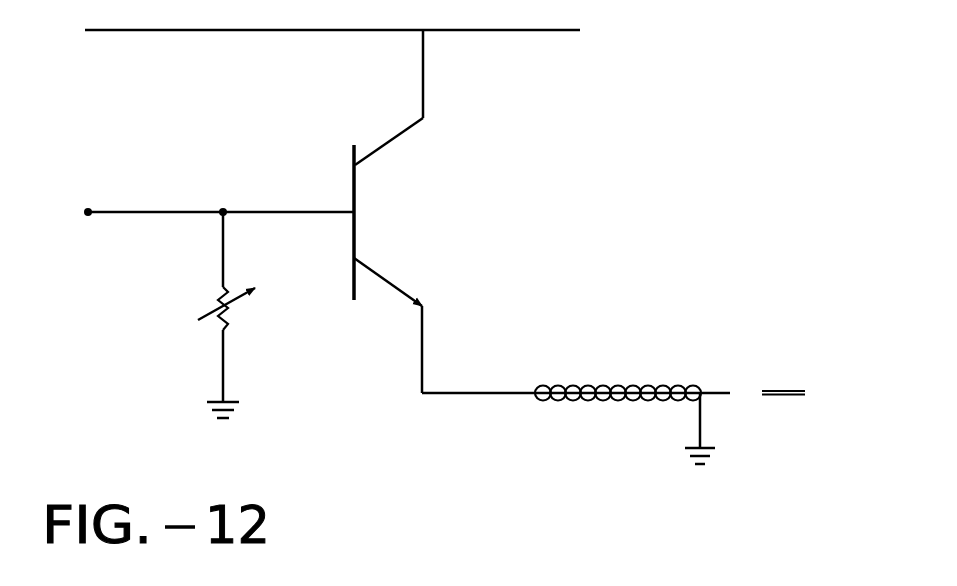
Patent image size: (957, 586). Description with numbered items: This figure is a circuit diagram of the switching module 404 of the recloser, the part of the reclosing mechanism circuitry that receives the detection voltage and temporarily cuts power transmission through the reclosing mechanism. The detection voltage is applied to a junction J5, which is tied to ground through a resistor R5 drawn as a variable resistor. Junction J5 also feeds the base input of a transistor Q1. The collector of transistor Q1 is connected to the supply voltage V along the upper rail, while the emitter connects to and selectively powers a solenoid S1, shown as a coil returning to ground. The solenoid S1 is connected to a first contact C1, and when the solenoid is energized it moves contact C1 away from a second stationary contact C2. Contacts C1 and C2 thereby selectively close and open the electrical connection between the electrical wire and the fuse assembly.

The switching module 404 is at (440, 232).
The transistor Q1 is at (388, 211).
The junction J5 is at (214, 189).
The resistor R5 is at (244, 315).
The solenoid S1 is at (618, 370).
The first contact C1 is at (658, 428).
The second stationary contact C2 is at (784, 416).